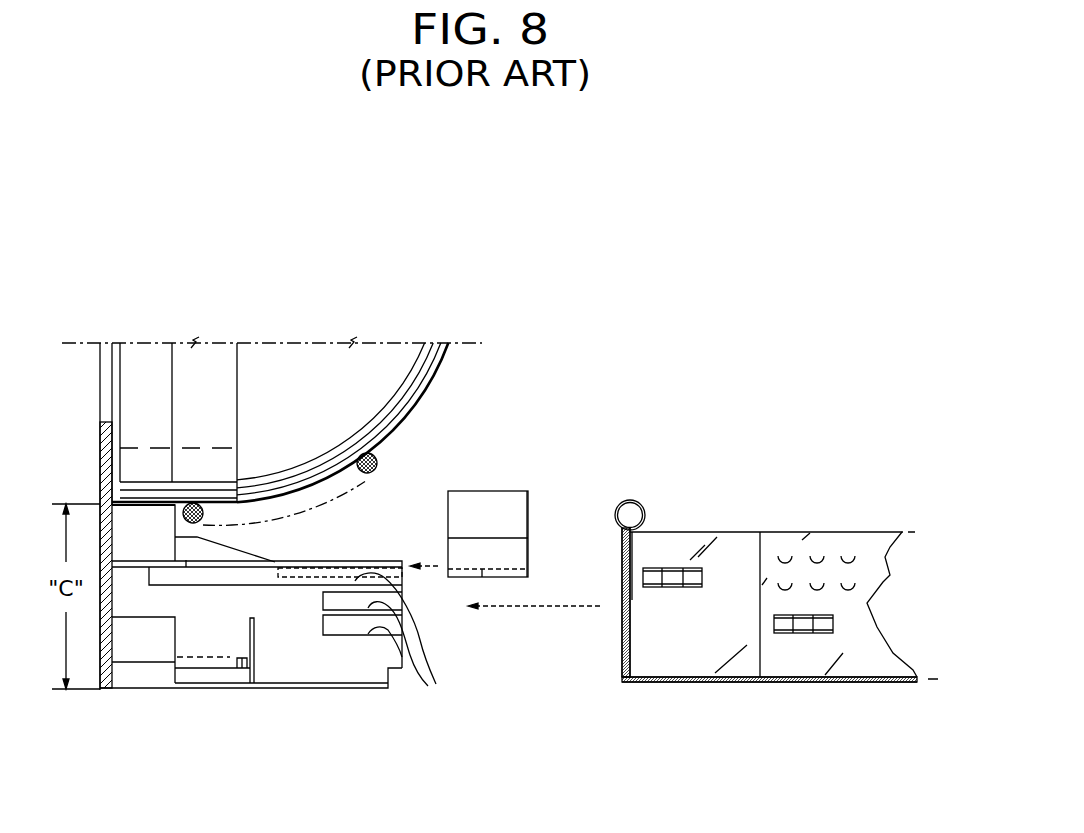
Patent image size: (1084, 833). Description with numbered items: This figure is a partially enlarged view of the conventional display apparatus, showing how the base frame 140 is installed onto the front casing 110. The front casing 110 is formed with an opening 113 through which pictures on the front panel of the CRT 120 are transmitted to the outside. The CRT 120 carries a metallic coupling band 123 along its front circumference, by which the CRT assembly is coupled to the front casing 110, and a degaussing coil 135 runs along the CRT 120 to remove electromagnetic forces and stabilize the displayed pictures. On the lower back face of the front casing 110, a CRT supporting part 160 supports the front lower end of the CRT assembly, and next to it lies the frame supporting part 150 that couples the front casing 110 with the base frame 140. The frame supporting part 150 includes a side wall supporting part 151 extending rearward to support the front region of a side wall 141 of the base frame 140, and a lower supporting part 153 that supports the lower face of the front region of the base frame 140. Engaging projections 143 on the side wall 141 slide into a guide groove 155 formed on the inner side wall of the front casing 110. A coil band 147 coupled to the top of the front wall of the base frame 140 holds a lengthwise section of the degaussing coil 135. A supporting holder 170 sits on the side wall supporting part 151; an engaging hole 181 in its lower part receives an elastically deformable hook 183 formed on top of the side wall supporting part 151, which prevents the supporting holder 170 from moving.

The front casing 110 is at (101, 689).
The opening 113 is at (107, 420).
The CRT 120 is at (431, 380).
The coupling band 123 is at (142, 358).
The degaussing coil 135 is at (378, 462).
The base frame 140 is at (776, 602).
The side wall 141 is at (750, 538).
The engaging projection 143 is at (672, 567).
The coil band 147 is at (636, 500).
The frame supporting part 150 is at (291, 673).
The side wall supporting part 151 is at (343, 662).
The lower supporting part 153 is at (355, 684).
The guide groove 155 is at (433, 683).
The CRT supporting part 160 is at (126, 509).
The supporting holder 170 is at (523, 491).
The engaging hole 181 is at (497, 576).
The hook 183 is at (321, 562).